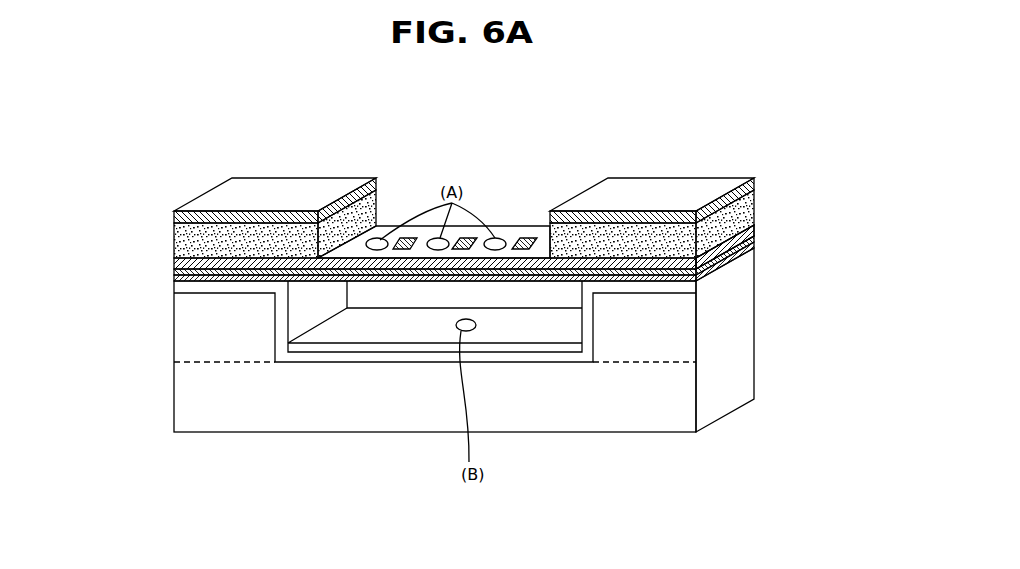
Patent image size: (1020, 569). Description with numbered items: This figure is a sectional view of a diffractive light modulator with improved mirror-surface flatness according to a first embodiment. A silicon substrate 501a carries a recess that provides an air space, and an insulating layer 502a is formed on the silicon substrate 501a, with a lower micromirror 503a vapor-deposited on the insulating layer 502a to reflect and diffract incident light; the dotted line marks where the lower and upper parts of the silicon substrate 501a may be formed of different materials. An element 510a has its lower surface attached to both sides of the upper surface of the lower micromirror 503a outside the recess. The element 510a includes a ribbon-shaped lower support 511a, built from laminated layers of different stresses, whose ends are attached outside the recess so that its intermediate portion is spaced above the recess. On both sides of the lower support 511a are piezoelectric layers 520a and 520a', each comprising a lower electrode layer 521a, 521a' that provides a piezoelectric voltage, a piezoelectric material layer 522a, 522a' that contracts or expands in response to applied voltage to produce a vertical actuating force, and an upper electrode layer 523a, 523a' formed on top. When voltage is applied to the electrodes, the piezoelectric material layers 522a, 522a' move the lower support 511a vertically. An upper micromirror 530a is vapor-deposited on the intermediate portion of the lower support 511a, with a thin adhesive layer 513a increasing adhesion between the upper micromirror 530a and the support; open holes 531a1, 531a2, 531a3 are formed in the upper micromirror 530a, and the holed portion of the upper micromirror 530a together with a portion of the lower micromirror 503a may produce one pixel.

The silicon substrate 501a is at (580, 425).
The insulating layer 502a is at (507, 355).
The lower micromirror 503a is at (343, 347).
The element 510a is at (393, 248).
The lower support 511a is at (176, 278).
The adhesive layer 513a is at (176, 271).
The piezoelectric layer 520a is at (464, 174).
The lower electrode layer 521a is at (464, 198).
The piezoelectric material layer 522a is at (305, 182).
The upper electrode layer 523a is at (293, 154).
The piezoelectric layer 520a' is at (721, 220).
The lower electrode layer 521a' is at (764, 245).
The piezoelectric material layer 522a' is at (691, 224).
The upper electrode layer 523a' is at (691, 197).
The upper micromirror 530a is at (475, 206).
The open hole 531a1 is at (410, 242).
The open hole 531a2 is at (470, 243).
The open hole 531a3 is at (527, 242).